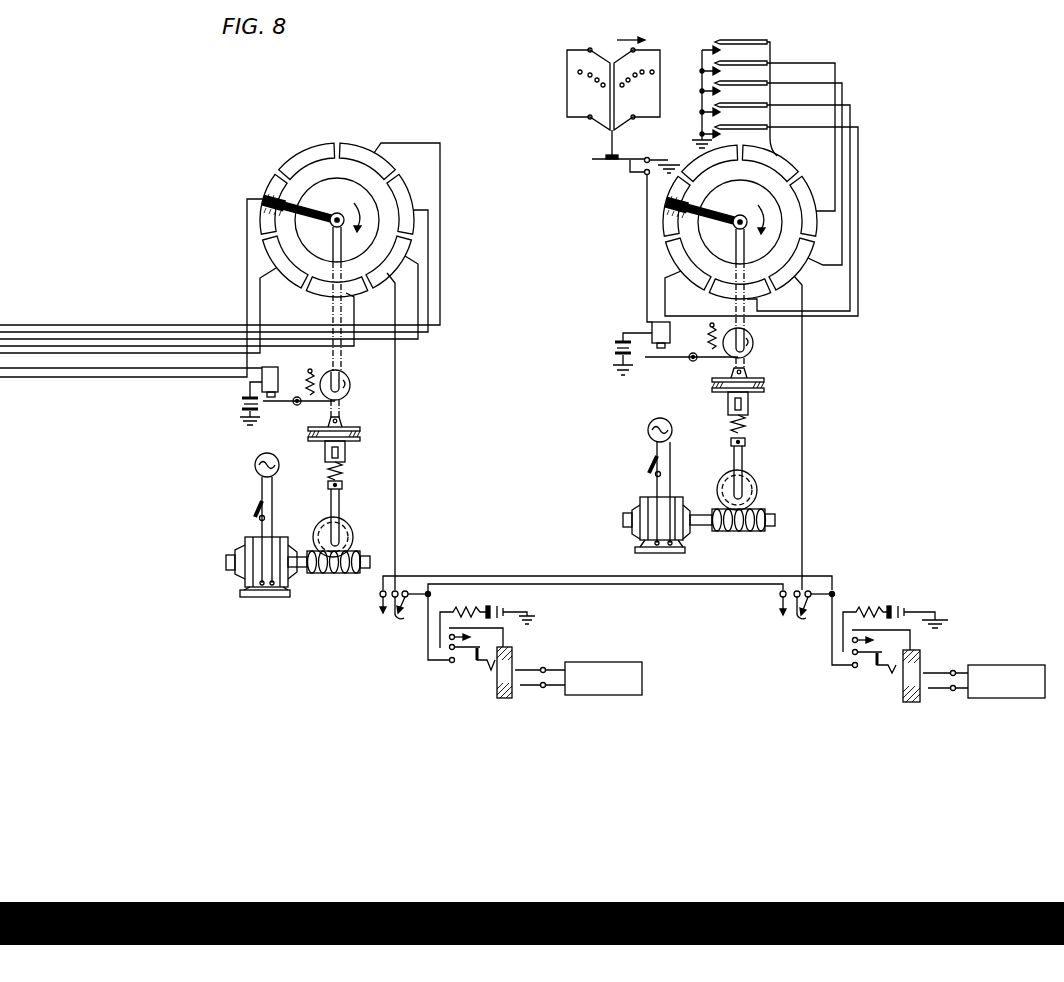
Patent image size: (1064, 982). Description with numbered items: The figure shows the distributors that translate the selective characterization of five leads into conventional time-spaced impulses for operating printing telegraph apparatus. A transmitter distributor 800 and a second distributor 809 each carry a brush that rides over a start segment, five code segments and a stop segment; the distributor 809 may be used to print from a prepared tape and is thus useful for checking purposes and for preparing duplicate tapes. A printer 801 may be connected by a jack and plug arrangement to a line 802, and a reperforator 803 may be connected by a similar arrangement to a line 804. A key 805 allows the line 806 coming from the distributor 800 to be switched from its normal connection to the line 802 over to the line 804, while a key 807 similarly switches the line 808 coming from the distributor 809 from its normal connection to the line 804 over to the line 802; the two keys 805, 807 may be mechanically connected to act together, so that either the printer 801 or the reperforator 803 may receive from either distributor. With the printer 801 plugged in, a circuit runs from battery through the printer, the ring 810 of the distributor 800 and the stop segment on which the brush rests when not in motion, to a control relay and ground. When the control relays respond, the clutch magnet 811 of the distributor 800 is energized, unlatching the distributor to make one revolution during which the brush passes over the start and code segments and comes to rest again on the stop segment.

The transmitter distributor 800 is at (312, 143).
The printer 801 is at (642, 671).
The line 802 is at (625, 585).
The reperforator 803 is at (997, 665).
The line 804 is at (812, 582).
The key 805 is at (394, 630).
The line 806 is at (397, 558).
The key 807 is at (797, 635).
The line 808 is at (803, 370).
The distributor 809 is at (818, 229).
The ring 810 is at (383, 208).
The clutch magnet 811 is at (278, 380).